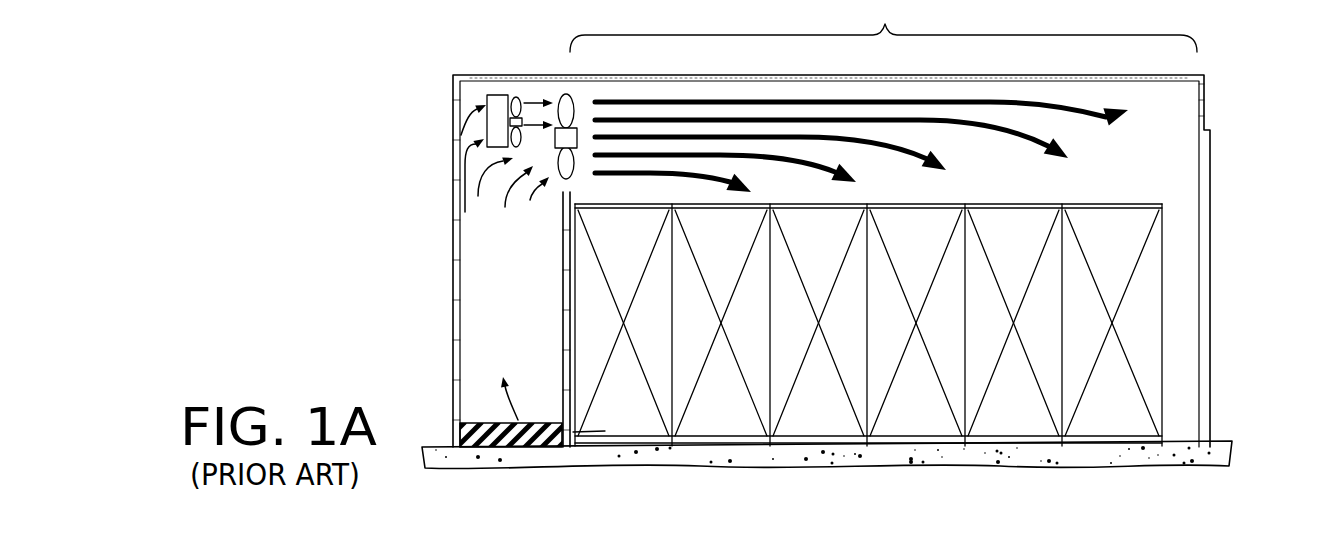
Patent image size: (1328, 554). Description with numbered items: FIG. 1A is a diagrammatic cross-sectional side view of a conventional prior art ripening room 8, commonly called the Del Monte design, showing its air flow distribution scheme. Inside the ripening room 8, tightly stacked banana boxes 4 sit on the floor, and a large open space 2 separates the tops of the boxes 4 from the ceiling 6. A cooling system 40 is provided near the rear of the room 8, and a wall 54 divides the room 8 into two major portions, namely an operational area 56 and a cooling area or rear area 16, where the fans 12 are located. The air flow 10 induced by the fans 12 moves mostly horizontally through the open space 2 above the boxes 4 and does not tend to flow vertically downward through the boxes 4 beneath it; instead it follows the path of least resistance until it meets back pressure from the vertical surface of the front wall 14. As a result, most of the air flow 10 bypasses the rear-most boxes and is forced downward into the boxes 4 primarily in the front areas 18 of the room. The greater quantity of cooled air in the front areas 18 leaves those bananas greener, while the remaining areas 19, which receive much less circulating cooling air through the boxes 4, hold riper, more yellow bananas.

The open space 2 is at (987, 145).
The banana boxes 4 is at (662, 328).
The ceiling 6 is at (953, 84).
The ripening room 8 is at (1223, 368).
The air flow 10 is at (1060, 140).
The fans 12 is at (571, 104).
The front wall 14 is at (1198, 95).
The rear area 16 is at (562, 476).
The front areas 18 is at (1207, 475).
The remaining areas 19 is at (1040, 480).
The cooling system 40 is at (500, 96).
The wall 54 is at (562, 292).
The operational area 56 is at (883, 26).